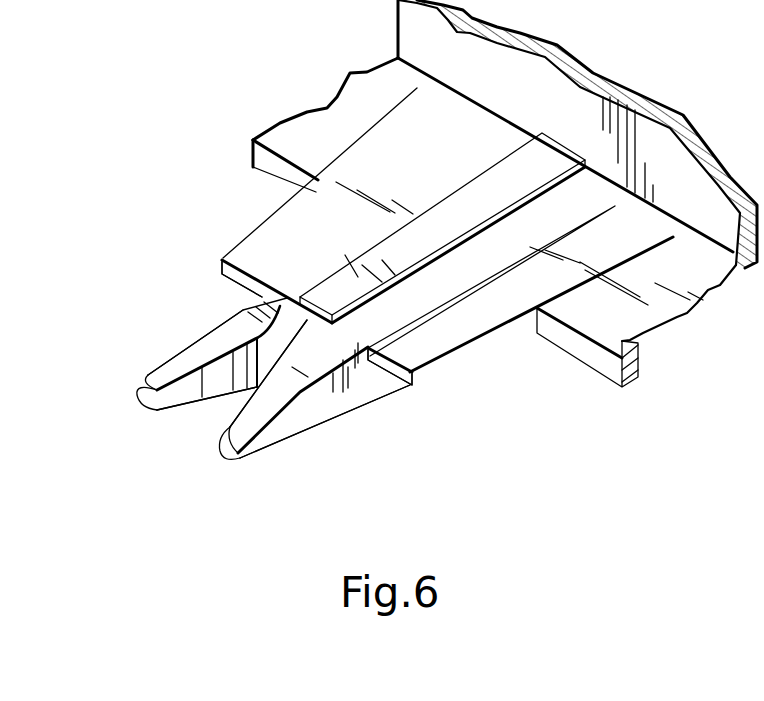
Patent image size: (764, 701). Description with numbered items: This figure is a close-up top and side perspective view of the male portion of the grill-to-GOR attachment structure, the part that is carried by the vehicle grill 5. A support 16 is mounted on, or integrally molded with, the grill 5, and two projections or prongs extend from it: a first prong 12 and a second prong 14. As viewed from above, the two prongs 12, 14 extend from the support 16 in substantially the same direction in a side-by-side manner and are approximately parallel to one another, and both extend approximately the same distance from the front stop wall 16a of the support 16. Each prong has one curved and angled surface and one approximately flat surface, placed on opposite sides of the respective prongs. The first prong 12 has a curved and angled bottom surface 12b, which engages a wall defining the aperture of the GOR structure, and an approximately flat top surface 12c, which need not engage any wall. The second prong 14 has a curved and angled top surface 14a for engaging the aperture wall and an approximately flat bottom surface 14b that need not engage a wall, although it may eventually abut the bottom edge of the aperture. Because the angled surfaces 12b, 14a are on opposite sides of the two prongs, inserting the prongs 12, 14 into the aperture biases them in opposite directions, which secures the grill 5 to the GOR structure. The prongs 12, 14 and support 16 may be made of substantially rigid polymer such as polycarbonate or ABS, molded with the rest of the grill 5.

The vehicle grill 5 is at (603, 317).
The first projection (prong) 12 is at (156, 342).
The bottom surface of prong 12 12b is at (213, 403).
The top surface of prong 12 12c is at (227, 335).
The second projection (prong) 14 is at (262, 435).
The top surface of prong 14 14a is at (277, 390).
The bottom surface of prong 14 14b is at (342, 410).
The support 16 is at (283, 227).
The front stop wall 16a is at (237, 273).